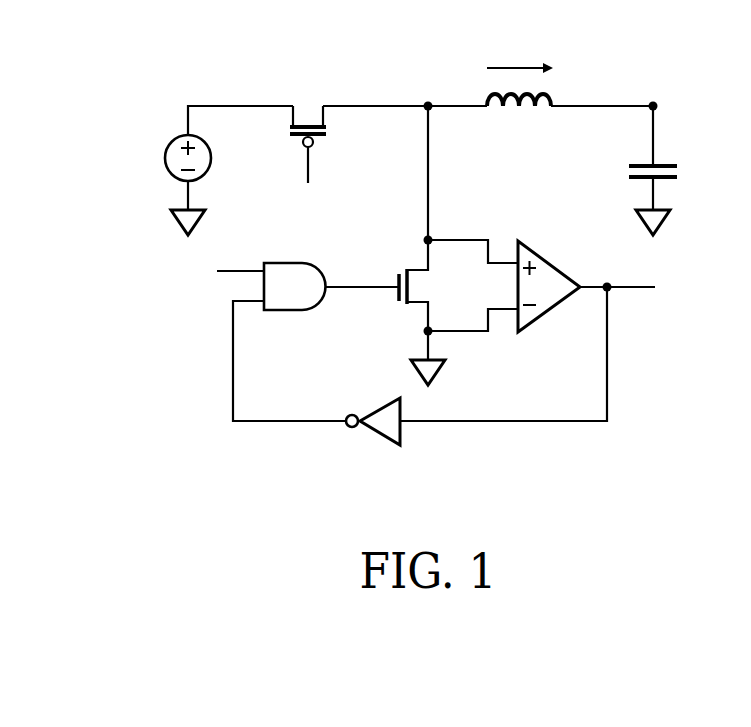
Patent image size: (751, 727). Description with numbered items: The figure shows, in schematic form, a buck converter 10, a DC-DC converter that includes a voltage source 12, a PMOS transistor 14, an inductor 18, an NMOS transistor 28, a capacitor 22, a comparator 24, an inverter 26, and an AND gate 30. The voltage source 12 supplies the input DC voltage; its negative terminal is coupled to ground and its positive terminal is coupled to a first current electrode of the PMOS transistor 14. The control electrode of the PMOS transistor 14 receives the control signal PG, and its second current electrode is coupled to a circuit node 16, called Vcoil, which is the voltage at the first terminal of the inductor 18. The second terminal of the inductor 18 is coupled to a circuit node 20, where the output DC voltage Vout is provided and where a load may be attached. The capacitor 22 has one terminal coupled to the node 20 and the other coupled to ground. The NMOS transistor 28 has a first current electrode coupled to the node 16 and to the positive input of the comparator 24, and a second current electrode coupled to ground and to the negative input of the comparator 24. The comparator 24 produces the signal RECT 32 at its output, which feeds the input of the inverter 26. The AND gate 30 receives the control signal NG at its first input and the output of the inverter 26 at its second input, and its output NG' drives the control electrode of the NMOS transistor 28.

The buck converter 10 is at (443, 511).
The voltage source 12 is at (165, 156).
The PMOS transistor 14 is at (305, 121).
The circuit node 16 is at (424, 109).
The inductor 18 is at (505, 109).
The circuit node 20 is at (658, 104).
The capacitor 22 is at (640, 163).
The comparator 24 is at (553, 262).
The inverter 26 is at (384, 403).
The NMOS transistor 28 is at (411, 283).
The AND gate 30 is at (285, 312).
The RECT signal 32 is at (669, 287).